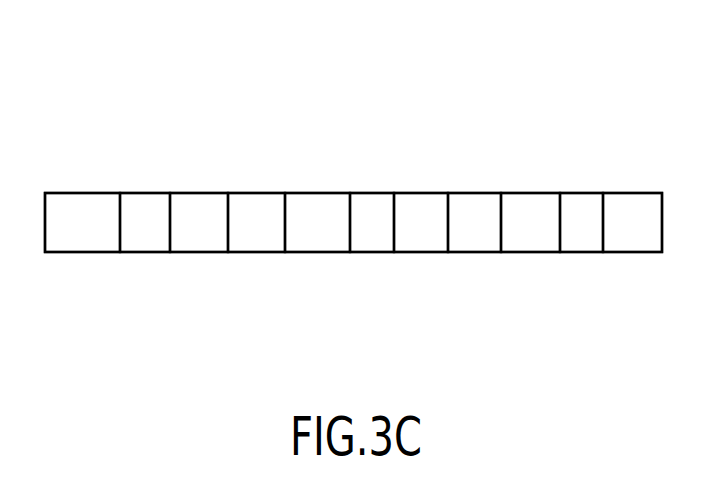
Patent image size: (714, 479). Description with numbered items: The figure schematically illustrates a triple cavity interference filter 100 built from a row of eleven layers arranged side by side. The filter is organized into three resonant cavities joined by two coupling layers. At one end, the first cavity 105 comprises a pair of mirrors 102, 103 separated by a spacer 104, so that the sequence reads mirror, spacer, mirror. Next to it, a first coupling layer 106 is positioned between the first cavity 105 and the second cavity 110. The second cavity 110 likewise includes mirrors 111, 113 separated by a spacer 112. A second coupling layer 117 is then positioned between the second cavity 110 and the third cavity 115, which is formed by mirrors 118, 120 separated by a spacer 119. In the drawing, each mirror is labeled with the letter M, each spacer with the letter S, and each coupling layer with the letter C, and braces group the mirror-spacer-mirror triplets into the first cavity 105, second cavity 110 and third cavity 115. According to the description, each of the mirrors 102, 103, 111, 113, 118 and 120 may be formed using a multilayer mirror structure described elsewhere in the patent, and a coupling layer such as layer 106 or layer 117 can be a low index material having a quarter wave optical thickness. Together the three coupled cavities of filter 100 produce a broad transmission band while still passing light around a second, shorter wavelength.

The triple cavity interference filter 100 is at (418, 100).
The mirror 102 is at (82, 193).
The mirror 103 is at (184, 193).
The spacer 104 is at (136, 191).
The first cavity 105 is at (228, 252).
The first coupling layer 106 is at (256, 193).
The second cavity 110 is at (448, 193).
The mirror 111 is at (298, 252).
The spacer 112 is at (365, 252).
The mirror 113 is at (421, 252).
The third cavity 115 is at (662, 252).
The second coupling layer 117 is at (463, 193).
The mirror 118 is at (540, 193).
The spacer 119 is at (572, 193).
The mirror 120 is at (612, 193).